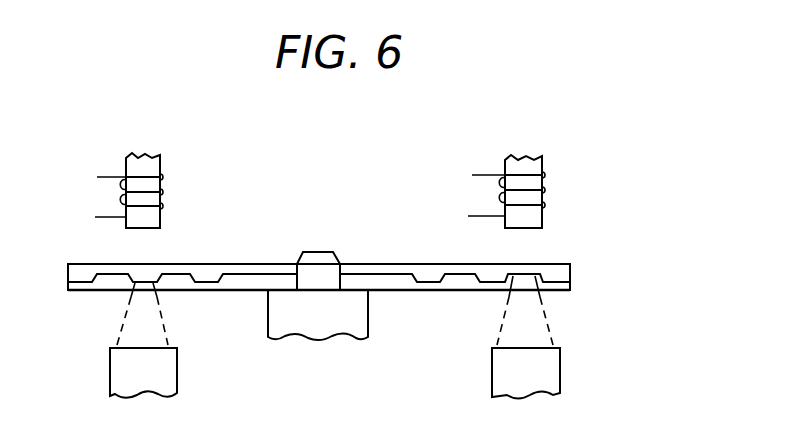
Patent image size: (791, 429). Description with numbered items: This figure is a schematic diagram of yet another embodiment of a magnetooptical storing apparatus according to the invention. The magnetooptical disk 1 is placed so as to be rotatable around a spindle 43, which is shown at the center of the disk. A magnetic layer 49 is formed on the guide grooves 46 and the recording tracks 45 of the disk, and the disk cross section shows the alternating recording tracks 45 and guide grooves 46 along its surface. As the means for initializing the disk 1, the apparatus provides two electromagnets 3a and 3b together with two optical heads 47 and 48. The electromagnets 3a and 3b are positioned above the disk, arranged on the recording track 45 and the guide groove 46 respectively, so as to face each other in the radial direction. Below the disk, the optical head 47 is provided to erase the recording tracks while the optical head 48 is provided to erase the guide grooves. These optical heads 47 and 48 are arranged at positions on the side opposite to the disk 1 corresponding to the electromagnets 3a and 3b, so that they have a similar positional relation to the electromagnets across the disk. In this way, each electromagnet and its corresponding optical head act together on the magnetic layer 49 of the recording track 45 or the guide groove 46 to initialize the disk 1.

The magnetooptical disk 1 is at (254, 248).
The electromagnet 3a is at (153, 162).
The electromagnet 3b is at (527, 167).
The spindle 43 is at (323, 259).
The recording track 45 is at (528, 274).
The guide groove 46 is at (140, 283).
The optical head 47 is at (543, 368).
The optical head 48 is at (123, 369).
The magnetic layer 49 is at (562, 291).